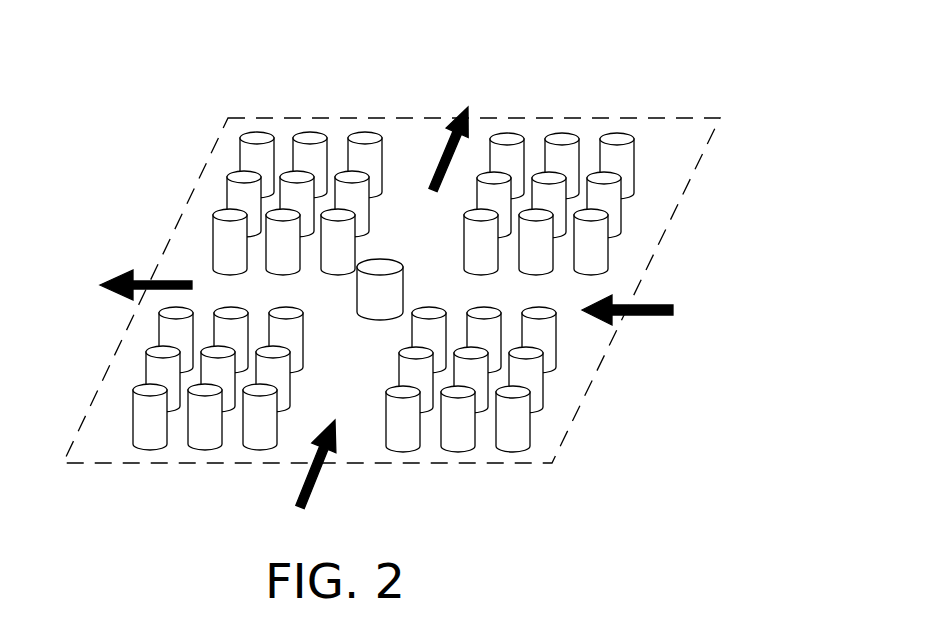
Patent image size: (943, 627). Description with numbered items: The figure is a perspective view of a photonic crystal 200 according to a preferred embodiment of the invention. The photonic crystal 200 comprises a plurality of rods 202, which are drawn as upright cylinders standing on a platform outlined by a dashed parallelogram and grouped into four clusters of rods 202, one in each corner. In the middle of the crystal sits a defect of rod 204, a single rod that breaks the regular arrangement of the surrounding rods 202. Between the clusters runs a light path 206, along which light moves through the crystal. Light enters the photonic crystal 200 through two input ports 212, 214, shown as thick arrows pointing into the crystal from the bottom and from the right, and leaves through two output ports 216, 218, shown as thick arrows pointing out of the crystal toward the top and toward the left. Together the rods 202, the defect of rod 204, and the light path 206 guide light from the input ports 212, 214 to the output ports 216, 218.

The photonic crystal 200 is at (700, 168).
The rods 202 is at (636, 163).
The defect of rod 204 is at (380, 257).
The light path 206 is at (345, 391).
The input port 212 is at (315, 485).
The input port 214 is at (658, 305).
The output port 216 is at (445, 158).
The output port 218 is at (141, 278).